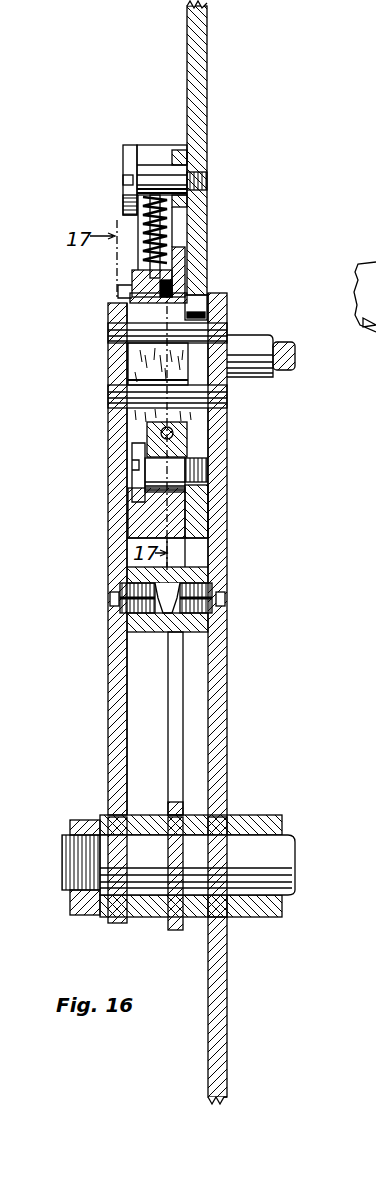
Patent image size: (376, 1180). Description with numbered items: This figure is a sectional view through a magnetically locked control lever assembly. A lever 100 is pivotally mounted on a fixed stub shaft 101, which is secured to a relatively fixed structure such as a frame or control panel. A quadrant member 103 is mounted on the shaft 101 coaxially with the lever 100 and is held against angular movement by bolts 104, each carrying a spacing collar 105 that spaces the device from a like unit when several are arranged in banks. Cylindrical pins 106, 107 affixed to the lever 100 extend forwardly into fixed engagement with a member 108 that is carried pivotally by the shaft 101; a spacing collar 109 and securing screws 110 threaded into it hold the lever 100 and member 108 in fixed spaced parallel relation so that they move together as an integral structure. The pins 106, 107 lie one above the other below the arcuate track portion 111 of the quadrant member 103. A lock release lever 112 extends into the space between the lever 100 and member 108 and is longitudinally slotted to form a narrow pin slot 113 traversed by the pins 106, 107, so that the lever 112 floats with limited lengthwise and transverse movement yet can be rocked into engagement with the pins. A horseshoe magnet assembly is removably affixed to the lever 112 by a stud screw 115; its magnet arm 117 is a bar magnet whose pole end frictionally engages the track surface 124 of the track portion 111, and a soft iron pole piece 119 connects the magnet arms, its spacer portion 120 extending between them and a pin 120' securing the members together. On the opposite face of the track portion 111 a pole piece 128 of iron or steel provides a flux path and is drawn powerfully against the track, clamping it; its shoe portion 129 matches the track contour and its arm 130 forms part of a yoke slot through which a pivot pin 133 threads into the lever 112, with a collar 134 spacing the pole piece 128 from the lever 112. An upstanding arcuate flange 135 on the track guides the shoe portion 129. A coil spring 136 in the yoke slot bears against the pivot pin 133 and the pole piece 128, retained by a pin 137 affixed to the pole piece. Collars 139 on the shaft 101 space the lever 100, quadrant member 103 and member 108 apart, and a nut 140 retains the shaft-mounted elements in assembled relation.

The lever 100 is at (212, 526).
The fixed stub shaft 101 is at (205, 864).
The quadrant member 103 is at (160, 723).
The bolts 104 is at (283, 373).
The spacing collar 105 is at (265, 341).
The pin 106 is at (115, 330).
The pin 107 is at (113, 393).
The member 108 is at (110, 668).
The spacing collar 109 is at (150, 632).
The securing screws 110 is at (122, 590).
The arcuate track portion 111 is at (130, 299).
The lock release lever 112 is at (195, 78).
The pin slot 113 is at (205, 300).
The stud screw 115 is at (150, 470).
The magnet arm 117 is at (135, 358).
The soft iron pole piece 119 is at (148, 518).
The spacer portion 120 is at (118, 435).
The pin 120' is at (222, 424).
The track surface 124 is at (172, 292).
The pole piece 128 is at (172, 285).
The shoe portion 129 is at (130, 290).
The arm 130 is at (148, 150).
The pivot pin 133 is at (170, 175).
The collar 134 is at (178, 143).
The upstanding arcuate flange 135 is at (181, 268).
The coil spring 136 is at (165, 225).
The pin 137 is at (160, 250).
The collars 139 is at (150, 918).
The nut 140 is at (75, 900).